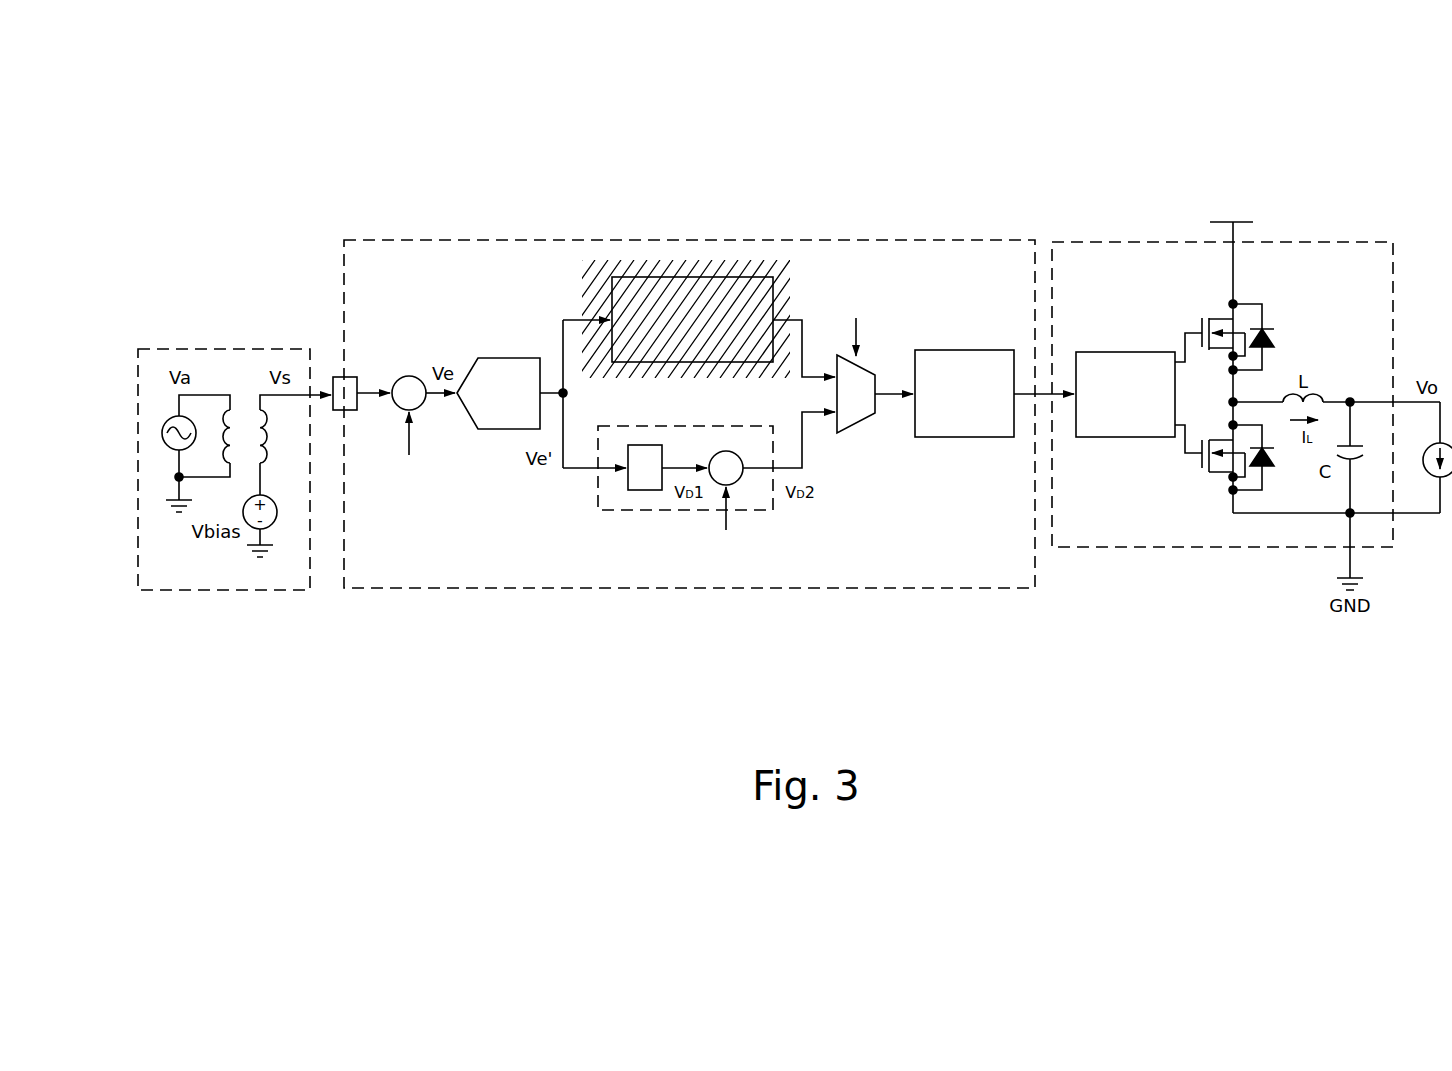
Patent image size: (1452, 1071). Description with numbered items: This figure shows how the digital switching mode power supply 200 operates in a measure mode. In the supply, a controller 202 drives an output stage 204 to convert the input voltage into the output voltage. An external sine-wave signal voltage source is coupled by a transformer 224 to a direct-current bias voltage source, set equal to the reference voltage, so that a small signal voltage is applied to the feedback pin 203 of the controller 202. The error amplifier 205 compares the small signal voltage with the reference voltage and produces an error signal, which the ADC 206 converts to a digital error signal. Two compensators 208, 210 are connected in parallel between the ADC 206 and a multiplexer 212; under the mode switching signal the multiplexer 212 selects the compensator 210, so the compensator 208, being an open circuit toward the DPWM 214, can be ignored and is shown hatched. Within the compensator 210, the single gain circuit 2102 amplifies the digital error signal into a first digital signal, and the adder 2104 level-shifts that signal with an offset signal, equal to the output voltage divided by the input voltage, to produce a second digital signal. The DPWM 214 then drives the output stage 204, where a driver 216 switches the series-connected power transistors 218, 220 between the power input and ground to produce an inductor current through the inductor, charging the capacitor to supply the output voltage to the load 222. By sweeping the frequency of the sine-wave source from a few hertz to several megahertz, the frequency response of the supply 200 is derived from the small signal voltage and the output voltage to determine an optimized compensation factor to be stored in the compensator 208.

The digital switching mode power supply 200 is at (1380, 157).
The controller 202 is at (676, 590).
The feedback pin 203 is at (336, 377).
The output stage 204 is at (1232, 548).
The error amplifier 205 is at (409, 376).
The ADC 206 is at (500, 358).
The compensator 208 is at (687, 363).
The compensator 210 is at (660, 510).
The single gain circuit 2102 is at (626, 486).
The adder 2104 is at (727, 450).
The multiplexer 212 is at (857, 425).
The DPWM 214 is at (965, 350).
The driver 216 is at (1125, 352).
The power transistor 218 is at (1206, 307).
The low-side switch 220 is at (1206, 479).
The load 222 is at (1432, 475).
The transformer 224 is at (243, 386).